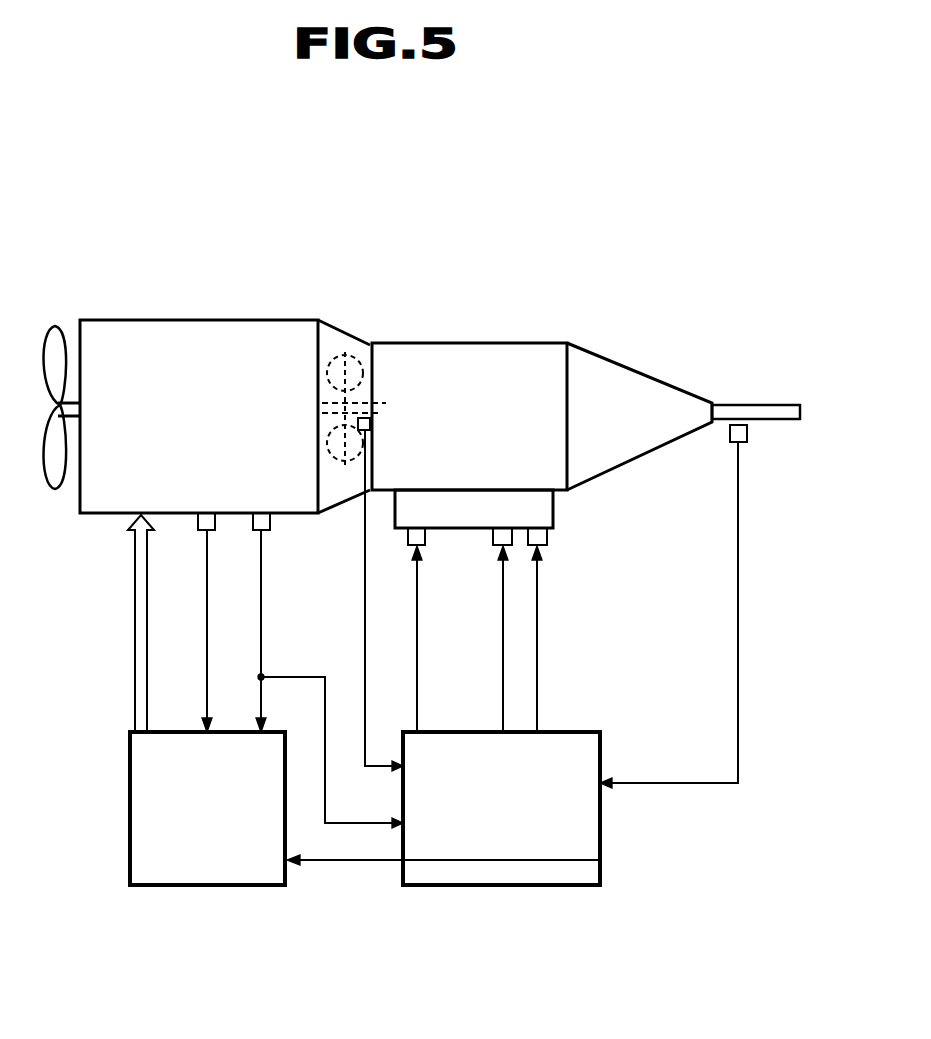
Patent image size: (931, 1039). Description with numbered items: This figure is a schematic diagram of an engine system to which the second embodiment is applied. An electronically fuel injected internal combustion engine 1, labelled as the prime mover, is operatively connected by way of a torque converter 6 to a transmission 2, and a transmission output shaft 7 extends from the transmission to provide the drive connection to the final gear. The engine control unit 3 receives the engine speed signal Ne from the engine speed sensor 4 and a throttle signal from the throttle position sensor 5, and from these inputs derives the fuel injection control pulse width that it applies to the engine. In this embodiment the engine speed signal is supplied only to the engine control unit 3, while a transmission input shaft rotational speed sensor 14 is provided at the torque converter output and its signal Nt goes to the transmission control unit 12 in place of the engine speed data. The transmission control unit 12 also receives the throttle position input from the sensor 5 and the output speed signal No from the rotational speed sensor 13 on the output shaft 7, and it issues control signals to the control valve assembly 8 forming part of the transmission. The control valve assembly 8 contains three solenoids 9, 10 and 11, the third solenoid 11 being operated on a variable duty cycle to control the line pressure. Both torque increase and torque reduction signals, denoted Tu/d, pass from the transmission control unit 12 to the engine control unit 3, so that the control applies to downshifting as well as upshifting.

The internal combustion engine 1 is at (122, 383).
The transmission 2 is at (384, 409).
The engine control unit 3 is at (235, 888).
The engine speed sensor 4 is at (215, 522).
The throttle position sensor 5 is at (270, 520).
The torque converter 6 is at (359, 362).
The transmission output shaft 7 is at (732, 401).
The control valve assembly 8 is at (553, 508).
The solenoid 9 is at (512, 546).
The solenoid 10 is at (546, 547).
The third solenoid 11 is at (426, 541).
The transmission control unit 12 is at (523, 888).
The rotational speed sensor 13 is at (748, 432).
The transmission input shaft rotational speed sensor 14 is at (370, 433).